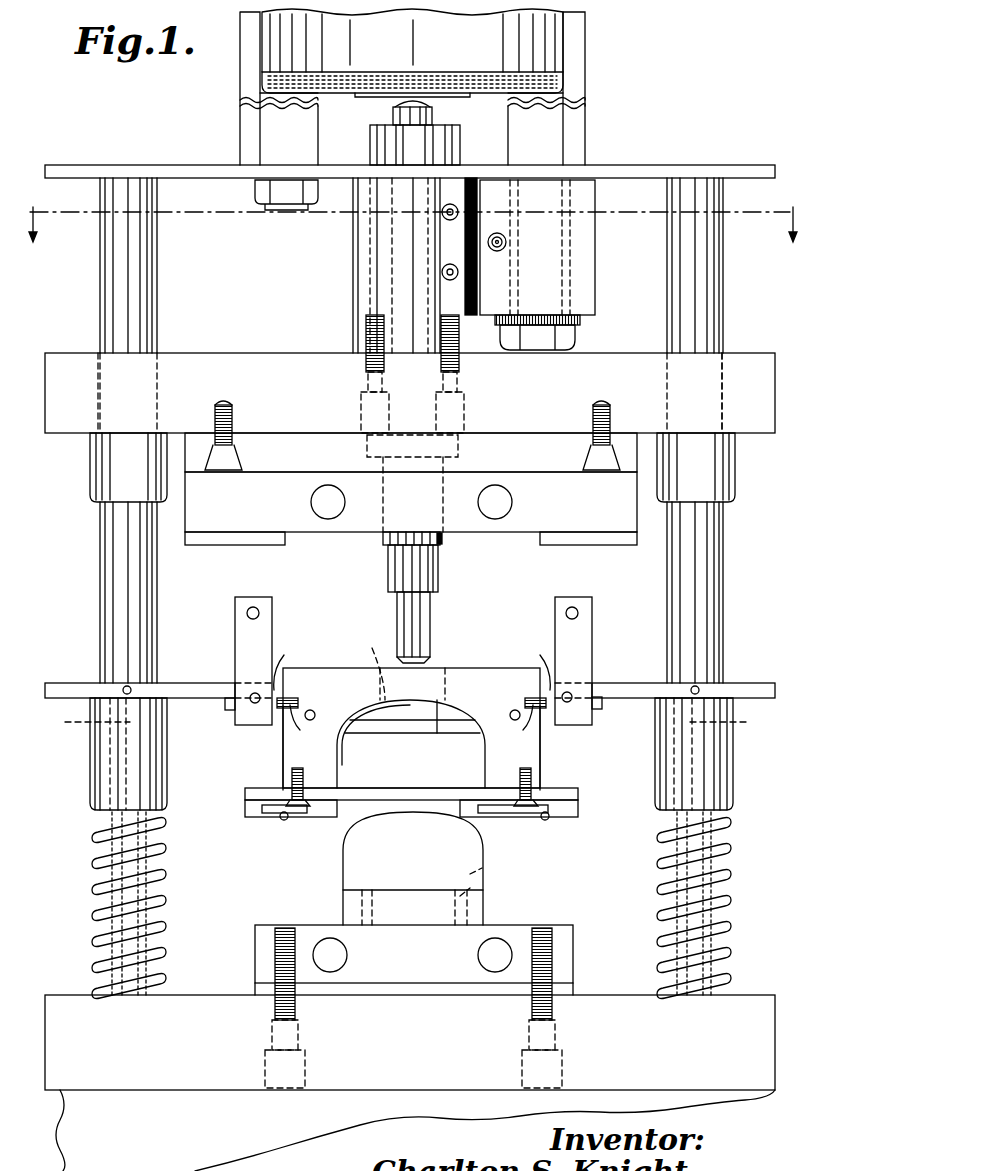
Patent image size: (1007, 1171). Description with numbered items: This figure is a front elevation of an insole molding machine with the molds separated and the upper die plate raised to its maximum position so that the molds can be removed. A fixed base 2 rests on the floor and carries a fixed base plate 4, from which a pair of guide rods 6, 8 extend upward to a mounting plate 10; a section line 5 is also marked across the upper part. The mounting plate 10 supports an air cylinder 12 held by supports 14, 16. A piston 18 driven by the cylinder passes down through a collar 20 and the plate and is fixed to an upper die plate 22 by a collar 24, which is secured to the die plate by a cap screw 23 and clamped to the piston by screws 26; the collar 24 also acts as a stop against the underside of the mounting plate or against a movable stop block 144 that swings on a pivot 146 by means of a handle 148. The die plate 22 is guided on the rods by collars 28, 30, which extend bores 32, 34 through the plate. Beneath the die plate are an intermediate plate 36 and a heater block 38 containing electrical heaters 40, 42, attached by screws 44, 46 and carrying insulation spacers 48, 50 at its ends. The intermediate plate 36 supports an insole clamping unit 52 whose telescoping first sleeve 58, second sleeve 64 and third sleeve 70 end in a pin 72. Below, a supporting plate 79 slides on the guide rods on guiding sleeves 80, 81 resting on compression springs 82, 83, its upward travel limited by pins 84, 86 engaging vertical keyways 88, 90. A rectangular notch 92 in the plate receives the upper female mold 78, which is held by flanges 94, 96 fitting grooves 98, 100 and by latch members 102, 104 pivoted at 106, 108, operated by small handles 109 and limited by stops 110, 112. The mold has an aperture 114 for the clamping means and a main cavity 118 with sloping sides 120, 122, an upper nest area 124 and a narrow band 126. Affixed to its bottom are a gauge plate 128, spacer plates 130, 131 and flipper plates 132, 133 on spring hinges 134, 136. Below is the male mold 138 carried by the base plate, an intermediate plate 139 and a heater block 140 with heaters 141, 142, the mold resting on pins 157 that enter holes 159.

The fixed base 2 is at (76, 1143).
The fixed base plate 4 is at (58, 1066).
The section line 5 is at (409, 238).
The guide rod 6 is at (100, 630).
The guide rod 8 is at (725, 610).
The mounting plate 10 is at (650, 168).
The air cylinder 12 is at (547, 36).
The support 14 is at (247, 80).
The support 16 is at (578, 78).
The piston 18 is at (432, 118).
The collar 20 is at (382, 145).
The upper die plate 22 is at (544, 404).
The cap screw 23 is at (365, 370).
The collar 24 is at (372, 272).
The screws 26 is at (456, 206).
The collar 28 is at (92, 470).
The collar 30 is at (735, 464).
The bore 32 is at (97, 403).
The bore 34 is at (722, 390).
The intermediate plate 36 is at (518, 462).
The heater block 38 is at (586, 504).
The electrical heater 40 is at (312, 498).
The electrical heater 42 is at (504, 508).
The screw 44 is at (233, 422).
The screw 46 is at (606, 412).
The insulation spacer 48 is at (228, 545).
The insulation spacer 50 is at (595, 545).
The insole clamping unit 52 is at (446, 543).
The first sleeve 58 is at (383, 539).
The second sleeve 64 is at (393, 568).
The third sleeve 70 is at (397, 614).
The pin 72 is at (425, 665).
The upper female mold 78 is at (500, 694).
The supporting plate 79 is at (55, 684).
The guiding sleeve 80 is at (92, 748).
The guiding sleeve 81 is at (733, 752).
The compression spring 82 is at (92, 882).
The compression spring 83 is at (733, 888).
The pin 84 is at (132, 689).
The pin 86 is at (699, 688).
The vertical keyway 88 is at (79, 720).
The vertical keyway 90 is at (735, 717).
The rectangular notch 92 is at (412, 666).
The flange 94 is at (272, 728).
The flange 96 is at (545, 716).
The groove 98 is at (299, 730).
The groove 100 is at (530, 715).
The latch member 102 is at (262, 652).
The latch member 104 is at (578, 648).
The pivot 106 is at (252, 704).
The pivot 108 is at (570, 695).
The handle 109 is at (255, 608).
The stop 110 is at (312, 711).
The stop 112 is at (512, 713).
The aperture 114 is at (361, 665).
The main cavity 118 is at (423, 782).
The sloping side 120 is at (338, 763).
The sloping side 122 is at (486, 768).
The upper nest area 124 is at (427, 728).
The narrow band 126 is at (352, 732).
The gauge plate 128 is at (556, 794).
The spacer plate 130 is at (248, 793).
The spacer plate 131 is at (580, 806).
The flipper plate 132 is at (300, 808).
The flipper plate 133 is at (517, 808).
The hinge 134 is at (282, 820).
The hinge 136 is at (547, 820).
The male mold 138 is at (345, 853).
The intermediate plate 139 is at (445, 990).
The heater block 140 is at (430, 970).
The heater 141 is at (328, 952).
The heater 142 is at (497, 952).
The movable stop block 144 is at (585, 253).
The pivot 146 is at (555, 349).
The handle 148 is at (505, 246).
The pin 157 is at (468, 892).
The hole 159 is at (478, 874).